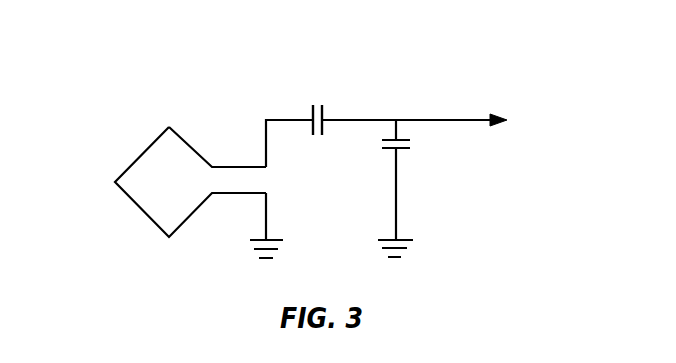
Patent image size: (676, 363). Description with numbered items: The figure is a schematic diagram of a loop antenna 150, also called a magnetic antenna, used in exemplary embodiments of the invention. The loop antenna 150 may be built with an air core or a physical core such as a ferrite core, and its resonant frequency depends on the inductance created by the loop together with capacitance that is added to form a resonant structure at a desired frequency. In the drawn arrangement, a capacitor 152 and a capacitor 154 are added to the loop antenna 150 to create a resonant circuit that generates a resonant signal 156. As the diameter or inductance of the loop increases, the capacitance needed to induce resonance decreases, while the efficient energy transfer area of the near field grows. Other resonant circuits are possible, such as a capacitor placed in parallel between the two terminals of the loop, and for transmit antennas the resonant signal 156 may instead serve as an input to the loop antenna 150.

The loop antenna 150 is at (142, 153).
The capacitor 152 is at (323, 112).
The capacitor 154 is at (403, 150).
The resonant signal 156 is at (430, 120).